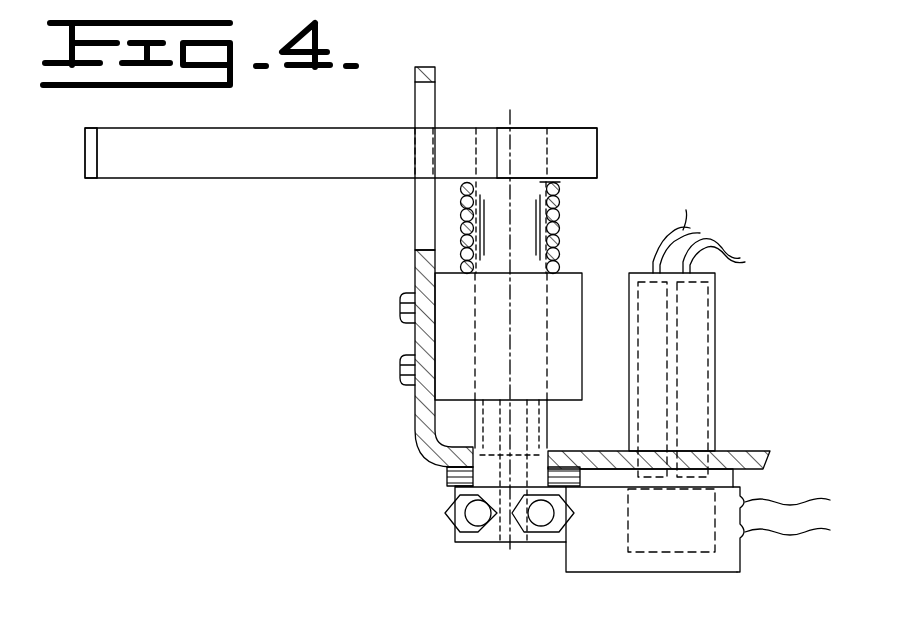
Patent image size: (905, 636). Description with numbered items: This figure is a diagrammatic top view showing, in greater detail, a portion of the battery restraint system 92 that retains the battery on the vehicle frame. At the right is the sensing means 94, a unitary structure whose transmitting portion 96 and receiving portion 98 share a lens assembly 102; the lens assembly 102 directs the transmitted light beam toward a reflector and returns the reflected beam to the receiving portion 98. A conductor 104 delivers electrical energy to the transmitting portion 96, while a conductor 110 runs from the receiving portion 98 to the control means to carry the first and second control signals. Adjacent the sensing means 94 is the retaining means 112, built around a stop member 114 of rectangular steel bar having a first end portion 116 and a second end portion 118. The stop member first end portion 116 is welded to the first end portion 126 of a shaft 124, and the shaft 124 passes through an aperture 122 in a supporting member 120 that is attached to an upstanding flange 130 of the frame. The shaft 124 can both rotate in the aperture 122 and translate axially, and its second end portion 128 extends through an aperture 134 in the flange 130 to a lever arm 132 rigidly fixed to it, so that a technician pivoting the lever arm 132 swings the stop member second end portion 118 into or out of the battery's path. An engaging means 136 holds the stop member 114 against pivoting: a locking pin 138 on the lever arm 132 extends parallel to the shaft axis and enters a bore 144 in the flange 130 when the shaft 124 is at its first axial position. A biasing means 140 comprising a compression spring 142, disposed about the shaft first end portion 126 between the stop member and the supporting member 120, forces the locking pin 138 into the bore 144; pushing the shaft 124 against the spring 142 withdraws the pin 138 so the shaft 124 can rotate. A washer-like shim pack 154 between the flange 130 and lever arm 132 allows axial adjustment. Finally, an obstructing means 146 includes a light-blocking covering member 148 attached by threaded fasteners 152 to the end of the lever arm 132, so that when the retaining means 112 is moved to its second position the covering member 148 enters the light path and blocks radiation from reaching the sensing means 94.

The system 92 is at (215, 368).
The sensing means 94 is at (763, 307).
The transmitting portion 96 is at (715, 387).
The receiving portion 98 is at (680, 353).
The lens assembly 102 is at (773, 476).
The conductor 104 is at (735, 258).
The conductor 110 is at (663, 228).
The retaining means 112 is at (233, 233).
The stop member 114 is at (300, 175).
The first end portion of stop member 116 is at (565, 129).
The second end portion of stop member 118 is at (117, 180).
The supporting member 120 is at (447, 328).
The aperture 122 is at (475, 382).
The shaft 124 is at (493, 267).
The first end portion of shaft 126 is at (558, 193).
The second end portion of shaft 128 is at (447, 467).
The upstanding flange 130 is at (437, 92).
The lever arm 132 is at (490, 543).
The aperture 134 is at (455, 478).
The engaging means 136 is at (448, 521).
The locking pin 138 is at (530, 546).
The biasing means 140 is at (457, 220).
The compression spring 142 is at (560, 215).
The bore 144 is at (518, 446).
The obstructing means 146 is at (752, 563).
The covering member 148 is at (747, 497).
The threaded fasteners 152 is at (540, 522).
The shim pack 154 is at (452, 500).